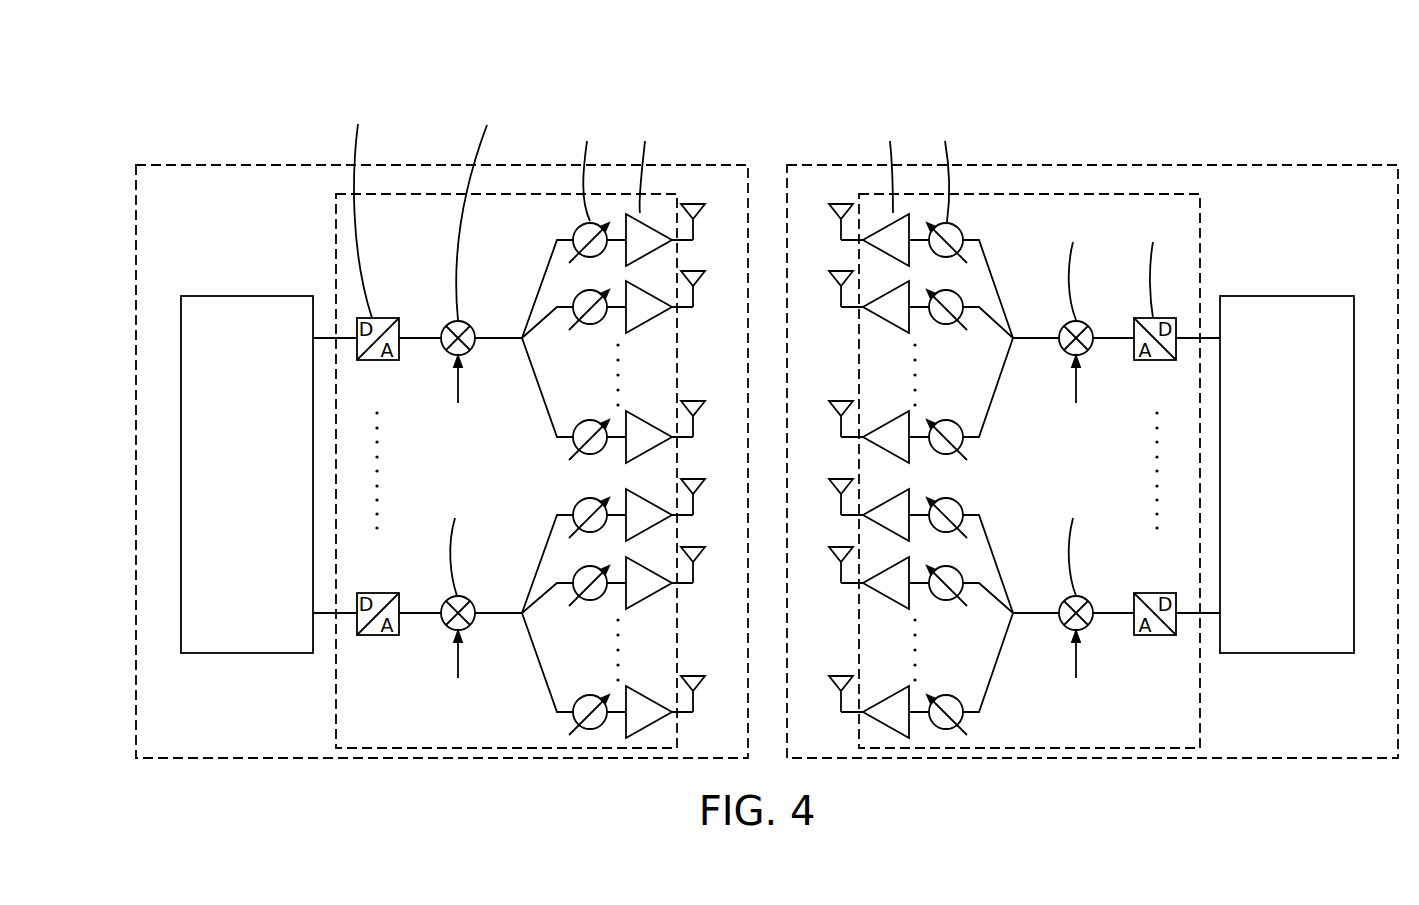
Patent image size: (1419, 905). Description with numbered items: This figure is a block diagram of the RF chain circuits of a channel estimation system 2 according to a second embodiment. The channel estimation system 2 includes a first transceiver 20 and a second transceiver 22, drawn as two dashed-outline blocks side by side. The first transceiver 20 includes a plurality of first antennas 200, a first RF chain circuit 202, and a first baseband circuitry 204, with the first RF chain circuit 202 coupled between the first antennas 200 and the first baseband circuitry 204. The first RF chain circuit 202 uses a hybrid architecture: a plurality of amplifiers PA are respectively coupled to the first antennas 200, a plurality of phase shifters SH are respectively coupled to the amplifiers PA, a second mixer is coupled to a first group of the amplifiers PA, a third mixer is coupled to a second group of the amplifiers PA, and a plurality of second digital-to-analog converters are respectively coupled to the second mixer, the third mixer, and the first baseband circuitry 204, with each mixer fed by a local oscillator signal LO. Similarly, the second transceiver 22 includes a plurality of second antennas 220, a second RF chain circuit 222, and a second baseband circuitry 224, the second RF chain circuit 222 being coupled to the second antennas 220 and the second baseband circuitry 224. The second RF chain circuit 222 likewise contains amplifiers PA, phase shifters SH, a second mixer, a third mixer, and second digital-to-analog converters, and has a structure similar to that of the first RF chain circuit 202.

The channel estimation system 2 is at (150, 69).
The first transceiver 20 is at (1092, 165).
The first antennas 200 is at (848, 203).
The first RF chain circuit 202 is at (1030, 748).
The first baseband circuitry 204 is at (1287, 653).
The second transceiver 22 is at (441, 165).
The second antennas 220 is at (688, 203).
The second RF chain circuit 222 is at (507, 748).
The second baseband circuitry 224 is at (248, 653).